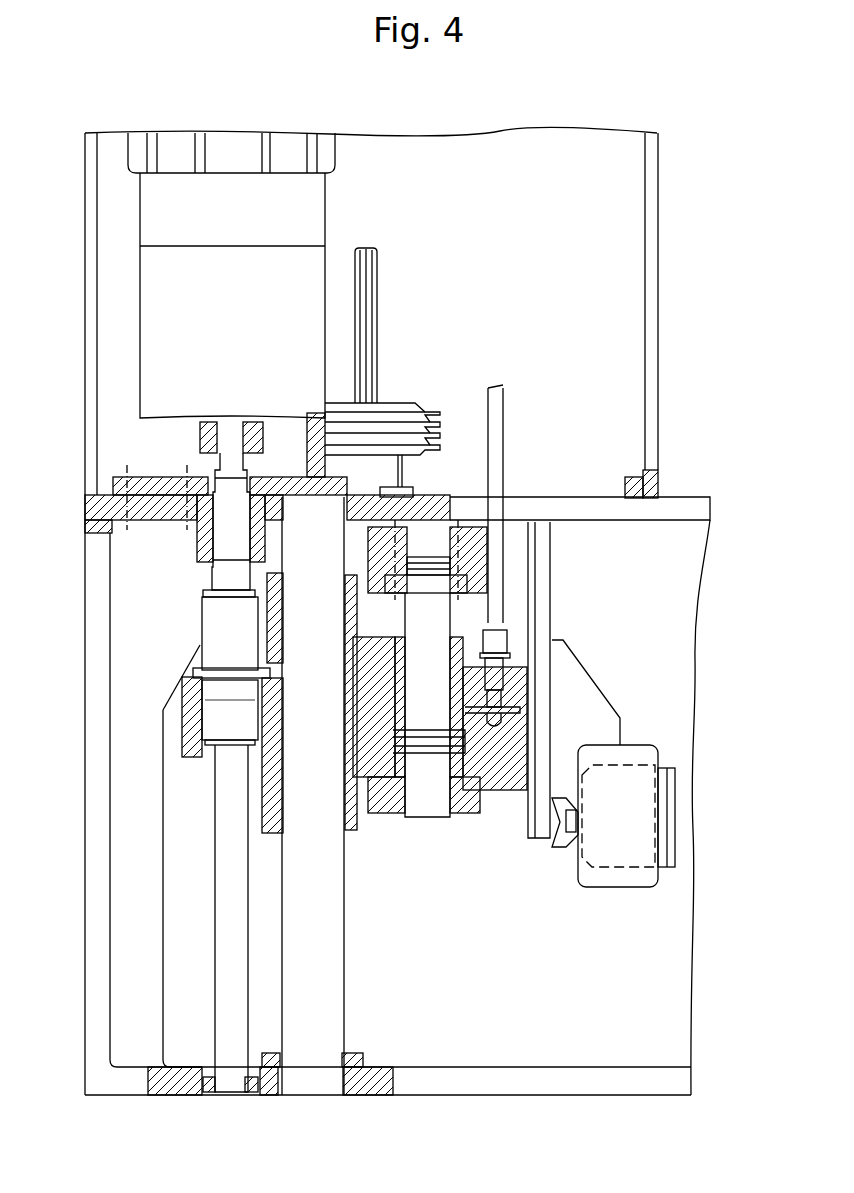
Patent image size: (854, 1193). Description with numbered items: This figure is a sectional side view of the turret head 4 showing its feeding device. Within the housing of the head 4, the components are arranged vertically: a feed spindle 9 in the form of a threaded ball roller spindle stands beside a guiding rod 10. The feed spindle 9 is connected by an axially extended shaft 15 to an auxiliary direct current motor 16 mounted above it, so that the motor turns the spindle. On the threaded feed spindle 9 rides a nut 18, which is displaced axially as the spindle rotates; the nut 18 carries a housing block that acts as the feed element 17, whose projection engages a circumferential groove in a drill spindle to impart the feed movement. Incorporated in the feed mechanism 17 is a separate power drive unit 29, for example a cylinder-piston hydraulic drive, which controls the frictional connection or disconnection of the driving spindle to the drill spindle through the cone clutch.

The head 4 is at (78, 1074).
The feed spindle 9 is at (237, 953).
The guiding rod 10 is at (323, 910).
The shaft 15 is at (262, 432).
The auxiliary direct current motor 16 is at (313, 218).
The feed element 17 is at (188, 636).
The nut 18 is at (220, 712).
The separate power drive unit 29 is at (475, 737).